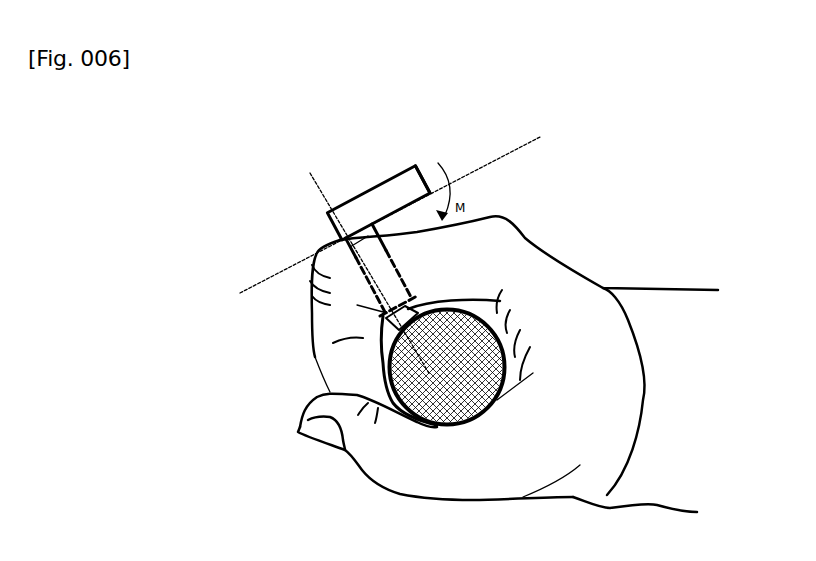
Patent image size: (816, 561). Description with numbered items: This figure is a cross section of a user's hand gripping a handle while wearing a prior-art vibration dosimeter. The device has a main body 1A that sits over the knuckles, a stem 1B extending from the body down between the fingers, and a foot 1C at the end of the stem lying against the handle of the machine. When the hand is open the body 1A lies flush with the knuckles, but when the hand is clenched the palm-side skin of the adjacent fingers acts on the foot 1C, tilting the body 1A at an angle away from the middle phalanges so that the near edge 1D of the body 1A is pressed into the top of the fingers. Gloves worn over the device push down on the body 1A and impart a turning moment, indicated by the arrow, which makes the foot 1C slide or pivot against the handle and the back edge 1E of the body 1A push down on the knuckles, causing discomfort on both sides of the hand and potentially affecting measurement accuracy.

The main body 1A is at (355, 197).
The stem 1B is at (384, 253).
The foot 1C is at (427, 305).
The near edge 1D is at (344, 240).
The back edge 1E is at (430, 191).